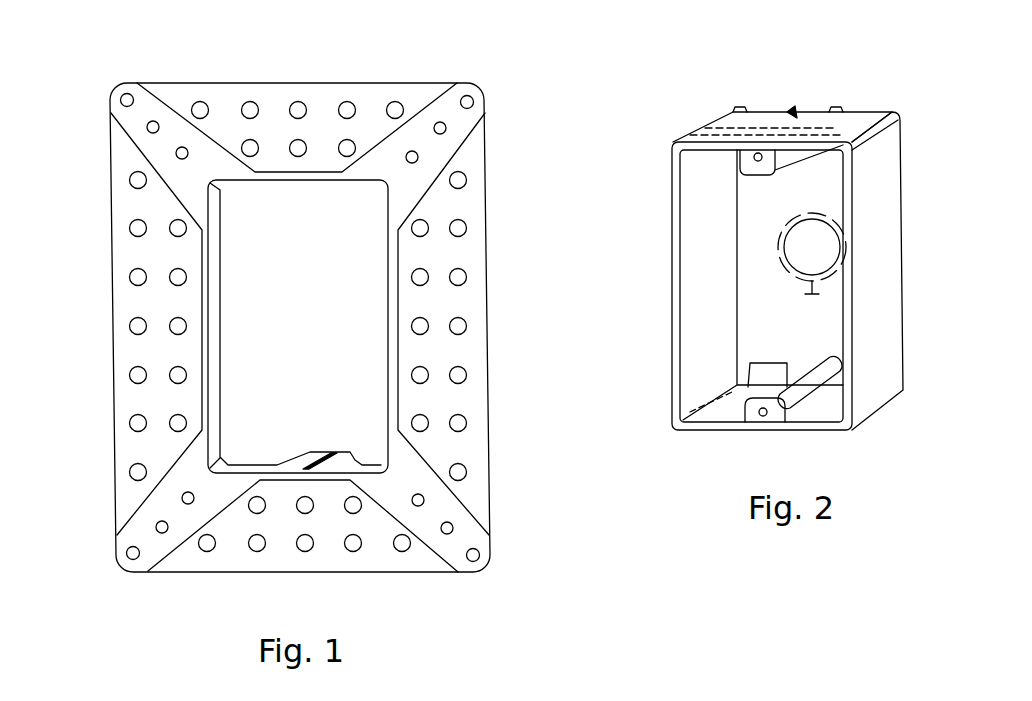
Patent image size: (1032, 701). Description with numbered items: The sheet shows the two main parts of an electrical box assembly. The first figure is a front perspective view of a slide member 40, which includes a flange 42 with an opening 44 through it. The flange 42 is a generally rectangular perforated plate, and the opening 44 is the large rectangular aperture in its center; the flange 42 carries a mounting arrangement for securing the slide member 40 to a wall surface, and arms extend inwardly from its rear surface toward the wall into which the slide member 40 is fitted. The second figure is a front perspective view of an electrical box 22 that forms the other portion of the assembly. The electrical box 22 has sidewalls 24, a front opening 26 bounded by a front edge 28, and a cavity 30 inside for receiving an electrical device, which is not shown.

In FIG. 2, the electrical box 22 is at (739, 226).
In FIG. 2, the sidewalls 24 is at (719, 262).
In FIG. 2, the front opening 26 is at (708, 197).
In FIG. 2, the front edge 28 is at (672, 285).
In FIG. 2, the cavity 30 is at (763, 332).
In FIG. 1, the slide member 40 is at (337, 339).
In FIG. 1, the flange 42 is at (115, 326).
In FIG. 1, the opening 44 is at (314, 336).